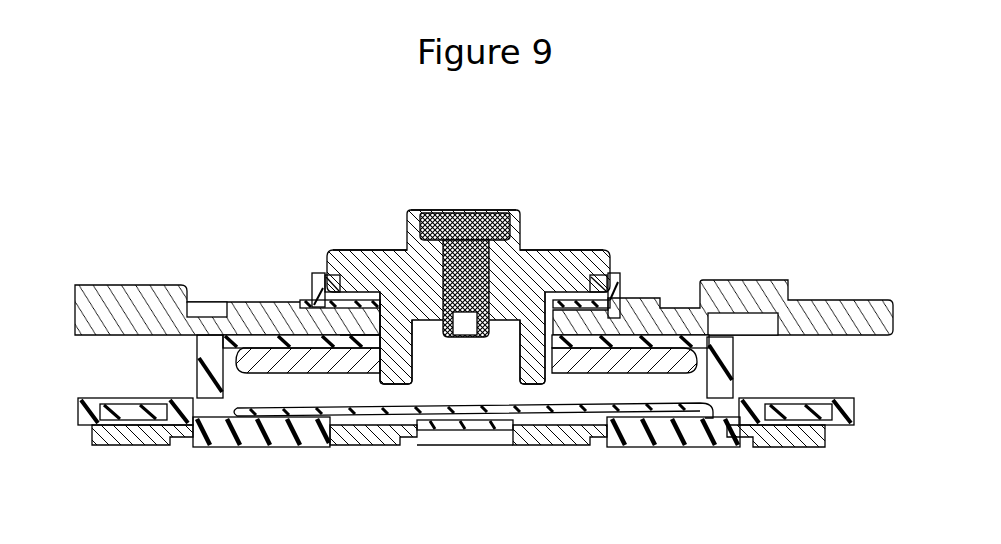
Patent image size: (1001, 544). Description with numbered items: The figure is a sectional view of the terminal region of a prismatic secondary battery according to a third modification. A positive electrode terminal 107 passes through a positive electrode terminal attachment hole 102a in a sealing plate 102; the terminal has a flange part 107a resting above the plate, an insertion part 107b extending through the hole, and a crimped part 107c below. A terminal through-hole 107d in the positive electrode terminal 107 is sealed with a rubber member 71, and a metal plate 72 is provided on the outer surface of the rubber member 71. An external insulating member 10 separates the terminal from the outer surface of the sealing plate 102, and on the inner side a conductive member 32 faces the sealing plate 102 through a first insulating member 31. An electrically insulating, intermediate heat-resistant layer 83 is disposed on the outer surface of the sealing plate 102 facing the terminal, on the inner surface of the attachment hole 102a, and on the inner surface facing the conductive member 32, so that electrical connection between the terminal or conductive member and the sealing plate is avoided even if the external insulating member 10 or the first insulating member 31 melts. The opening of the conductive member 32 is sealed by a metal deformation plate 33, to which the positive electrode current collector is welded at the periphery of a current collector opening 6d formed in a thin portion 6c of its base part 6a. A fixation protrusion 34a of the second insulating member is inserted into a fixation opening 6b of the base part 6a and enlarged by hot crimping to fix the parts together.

The base part 6a is at (383, 448).
The fixation opening 6b is at (216, 448).
The thin portion 6c is at (410, 448).
The current collector opening 6d is at (446, 448).
The external insulating member 10 is at (613, 281).
The first insulating member 31 is at (290, 322).
The conductive member 32 is at (245, 318).
The deformation plate 33 is at (281, 448).
The fixation protrusion 34a is at (242, 448).
The rubber member 71 is at (469, 226).
The metal plate 72 is at (487, 212).
The electrically insulating, intermediate heat-resistant layer 83 is at (331, 292).
The sealing plate 102 is at (853, 318).
The positive electrode terminal attachment hole 102a is at (360, 326).
The positive electrode terminal 107 is at (538, 250).
The flange part 107a is at (363, 262).
The insertion part 107b is at (400, 340).
The crimped part 107c is at (548, 432).
The terminal through-hole 107d is at (445, 213).